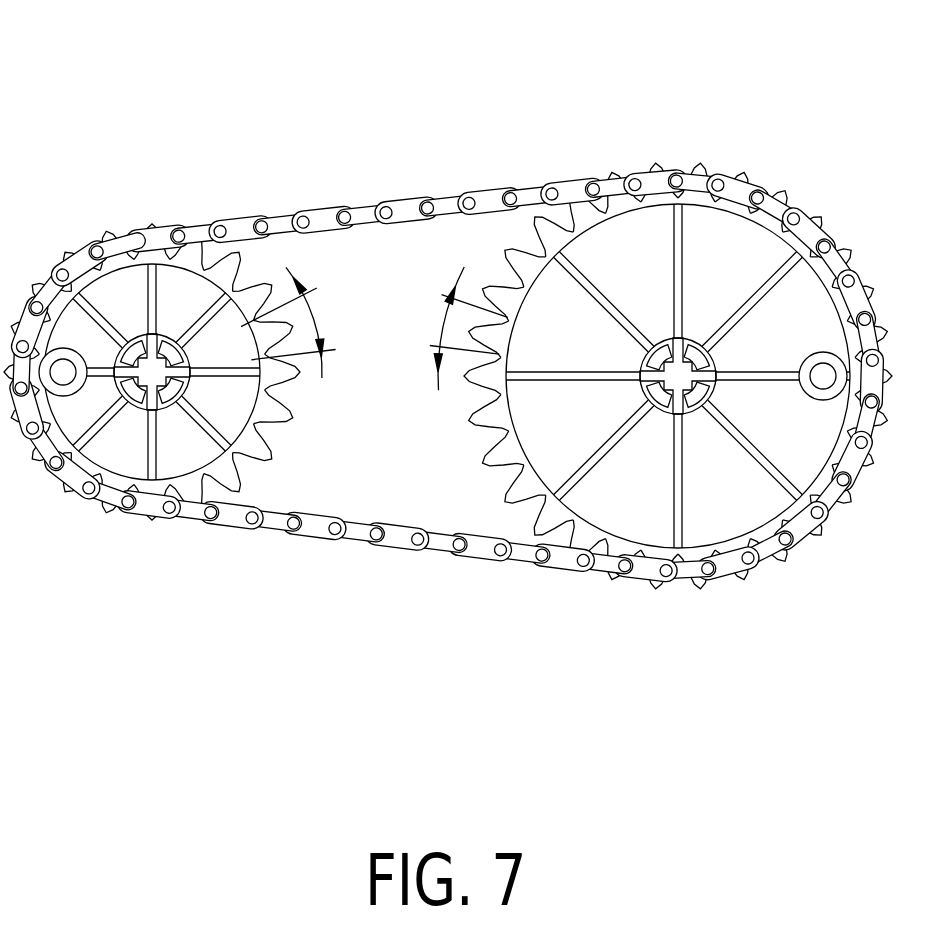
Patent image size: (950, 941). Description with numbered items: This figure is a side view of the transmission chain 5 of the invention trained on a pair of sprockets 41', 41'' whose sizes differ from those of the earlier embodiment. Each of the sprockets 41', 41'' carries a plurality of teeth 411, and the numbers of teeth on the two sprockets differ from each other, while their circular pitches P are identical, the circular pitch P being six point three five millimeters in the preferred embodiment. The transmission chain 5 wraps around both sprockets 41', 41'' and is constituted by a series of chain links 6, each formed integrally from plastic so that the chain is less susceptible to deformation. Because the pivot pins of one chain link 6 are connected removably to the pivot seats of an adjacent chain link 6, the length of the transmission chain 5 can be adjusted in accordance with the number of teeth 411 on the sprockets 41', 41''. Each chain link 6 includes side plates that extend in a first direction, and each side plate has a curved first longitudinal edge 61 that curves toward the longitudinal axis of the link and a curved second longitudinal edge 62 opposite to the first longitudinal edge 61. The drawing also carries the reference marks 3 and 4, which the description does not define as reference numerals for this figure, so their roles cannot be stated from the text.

The chain 3 is at (445, 291).
The sprocket teeth 4 is at (485, 462).
The sprocket 41' is at (152, 313).
The sprocket 41'' is at (678, 308).
The teeth 411 is at (148, 229).
The transmission chain 5 is at (448, 199).
The chain link 6 is at (402, 207).
The first longitudinal edge 61 is at (281, 248).
The second longitudinal edge 62 is at (260, 242).
The circular pitch P is at (374, 328).